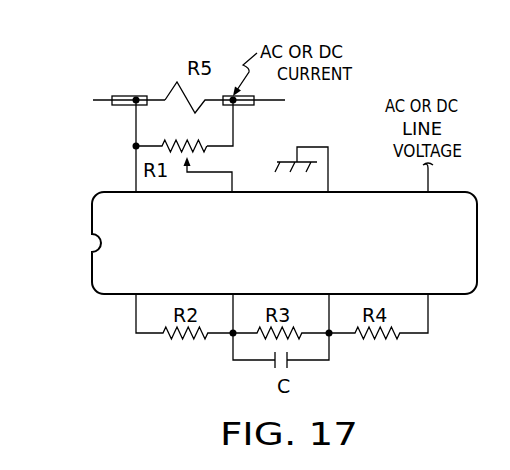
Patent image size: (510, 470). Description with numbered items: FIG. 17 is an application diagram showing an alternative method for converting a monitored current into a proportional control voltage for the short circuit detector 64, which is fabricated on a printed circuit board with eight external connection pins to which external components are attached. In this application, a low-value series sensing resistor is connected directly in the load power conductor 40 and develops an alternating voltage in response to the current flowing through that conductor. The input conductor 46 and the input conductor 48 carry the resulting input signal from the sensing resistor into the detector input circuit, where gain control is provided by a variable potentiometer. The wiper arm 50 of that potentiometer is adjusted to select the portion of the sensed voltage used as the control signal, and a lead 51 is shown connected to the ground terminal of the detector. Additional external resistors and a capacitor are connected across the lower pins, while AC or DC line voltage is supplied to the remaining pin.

The load power conductor 40 is at (107, 98).
The input conductor 46 is at (234, 128).
The input conductor 48 is at (134, 134).
The wiper arm 50 is at (229, 171).
The ground lead 51 is at (330, 180).
The short circuit detector 64 is at (84, 217).